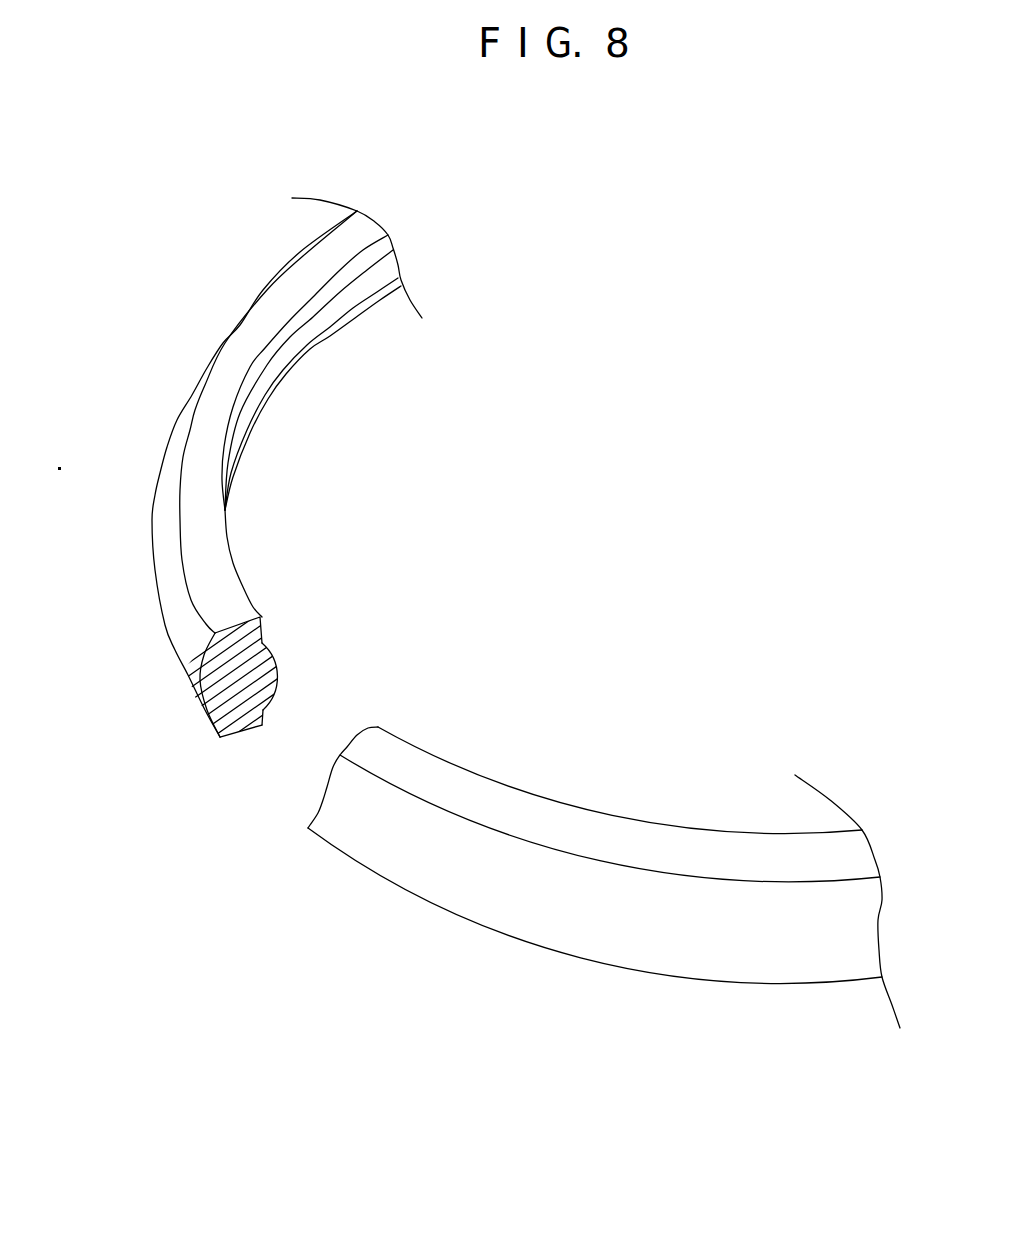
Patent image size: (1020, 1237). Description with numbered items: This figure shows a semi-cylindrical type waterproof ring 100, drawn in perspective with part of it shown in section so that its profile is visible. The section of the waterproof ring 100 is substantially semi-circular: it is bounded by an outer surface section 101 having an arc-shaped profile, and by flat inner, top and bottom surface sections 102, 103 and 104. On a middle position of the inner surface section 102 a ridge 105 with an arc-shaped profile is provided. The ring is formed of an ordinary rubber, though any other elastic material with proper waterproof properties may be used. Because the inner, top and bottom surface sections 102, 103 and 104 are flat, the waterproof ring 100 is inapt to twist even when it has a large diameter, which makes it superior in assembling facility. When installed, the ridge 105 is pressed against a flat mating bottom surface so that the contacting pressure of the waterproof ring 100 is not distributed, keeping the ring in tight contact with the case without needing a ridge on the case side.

The waterproof ring 100 is at (263, 267).
The outer surface section 101 is at (182, 622).
The inner surface section 102 is at (265, 630).
The top surface section 103 is at (217, 568).
The bottom surface section 104 is at (240, 737).
The ridge 105 is at (278, 670).